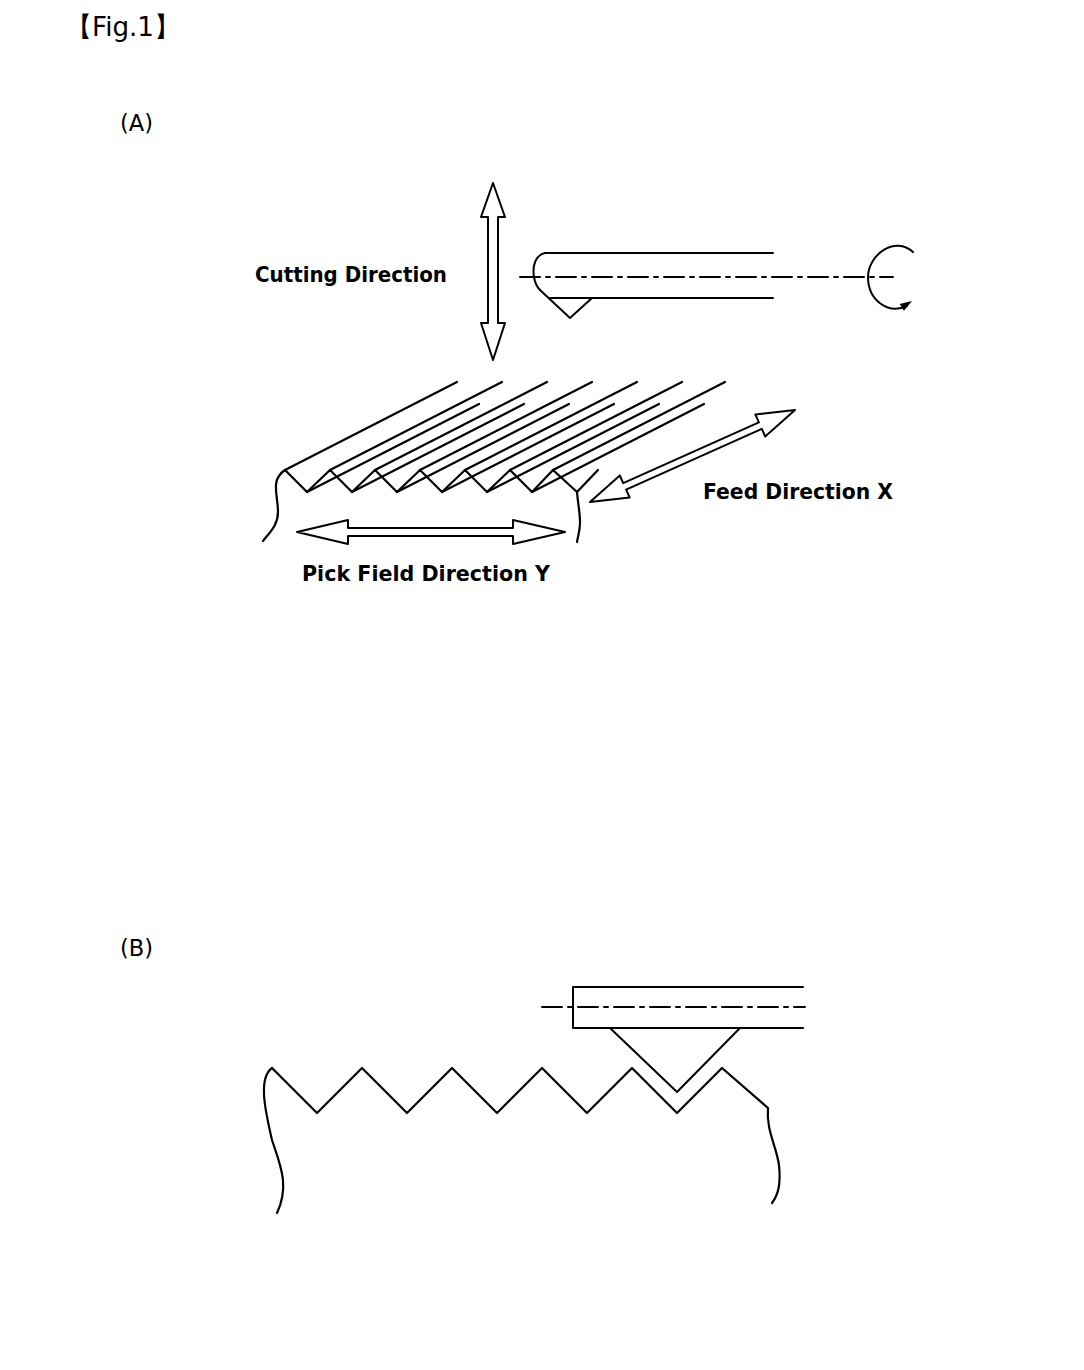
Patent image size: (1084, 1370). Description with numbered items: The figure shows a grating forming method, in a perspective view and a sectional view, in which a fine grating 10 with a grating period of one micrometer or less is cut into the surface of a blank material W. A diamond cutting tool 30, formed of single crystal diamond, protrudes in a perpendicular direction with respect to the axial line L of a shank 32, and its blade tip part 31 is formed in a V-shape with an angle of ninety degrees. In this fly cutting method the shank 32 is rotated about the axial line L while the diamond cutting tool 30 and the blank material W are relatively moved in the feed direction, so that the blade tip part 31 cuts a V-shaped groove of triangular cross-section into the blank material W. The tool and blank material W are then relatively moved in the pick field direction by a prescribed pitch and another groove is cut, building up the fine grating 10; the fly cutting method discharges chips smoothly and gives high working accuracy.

The fine grating 10 is at (349, 410).
The diamond cutting tool 30 is at (577, 308).
The blade tip part 31 is at (575, 305).
The shank 32 is at (743, 267).
The axial line L is at (768, 278).
The blank material W is at (262, 526).